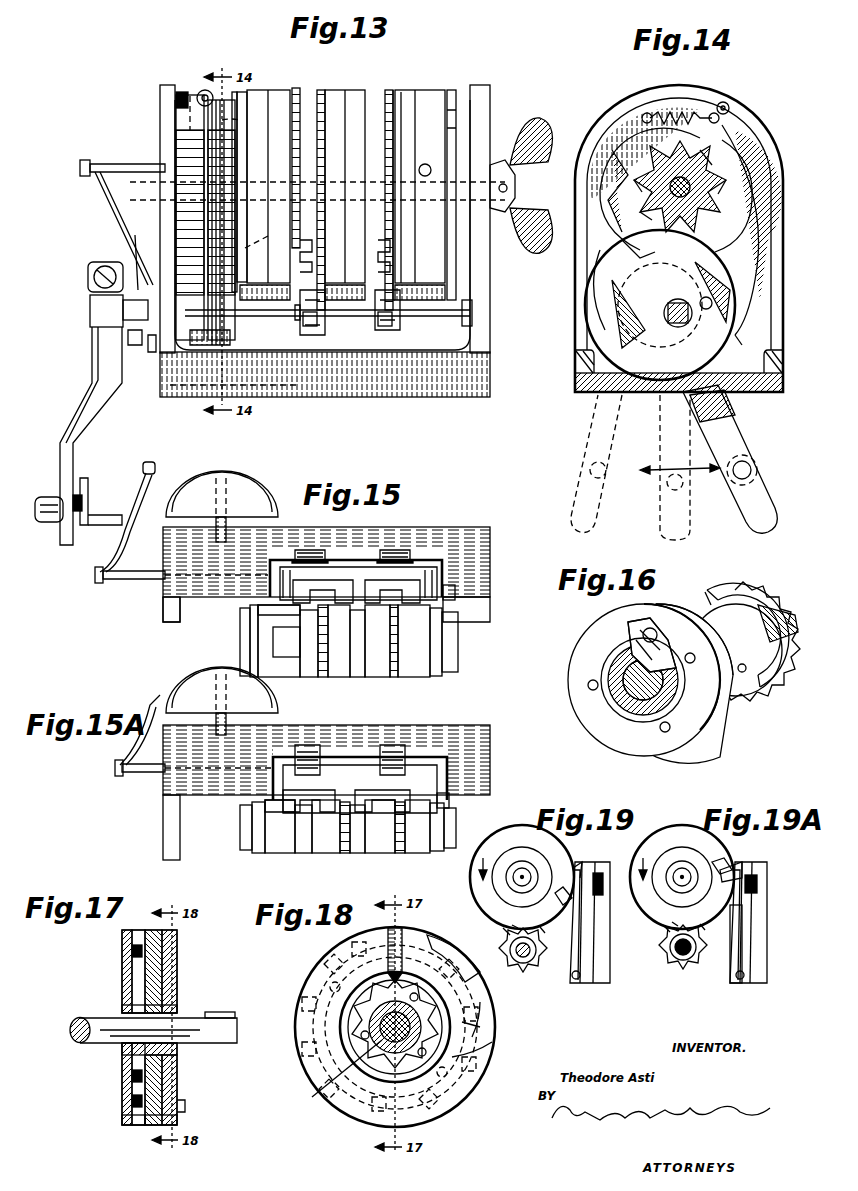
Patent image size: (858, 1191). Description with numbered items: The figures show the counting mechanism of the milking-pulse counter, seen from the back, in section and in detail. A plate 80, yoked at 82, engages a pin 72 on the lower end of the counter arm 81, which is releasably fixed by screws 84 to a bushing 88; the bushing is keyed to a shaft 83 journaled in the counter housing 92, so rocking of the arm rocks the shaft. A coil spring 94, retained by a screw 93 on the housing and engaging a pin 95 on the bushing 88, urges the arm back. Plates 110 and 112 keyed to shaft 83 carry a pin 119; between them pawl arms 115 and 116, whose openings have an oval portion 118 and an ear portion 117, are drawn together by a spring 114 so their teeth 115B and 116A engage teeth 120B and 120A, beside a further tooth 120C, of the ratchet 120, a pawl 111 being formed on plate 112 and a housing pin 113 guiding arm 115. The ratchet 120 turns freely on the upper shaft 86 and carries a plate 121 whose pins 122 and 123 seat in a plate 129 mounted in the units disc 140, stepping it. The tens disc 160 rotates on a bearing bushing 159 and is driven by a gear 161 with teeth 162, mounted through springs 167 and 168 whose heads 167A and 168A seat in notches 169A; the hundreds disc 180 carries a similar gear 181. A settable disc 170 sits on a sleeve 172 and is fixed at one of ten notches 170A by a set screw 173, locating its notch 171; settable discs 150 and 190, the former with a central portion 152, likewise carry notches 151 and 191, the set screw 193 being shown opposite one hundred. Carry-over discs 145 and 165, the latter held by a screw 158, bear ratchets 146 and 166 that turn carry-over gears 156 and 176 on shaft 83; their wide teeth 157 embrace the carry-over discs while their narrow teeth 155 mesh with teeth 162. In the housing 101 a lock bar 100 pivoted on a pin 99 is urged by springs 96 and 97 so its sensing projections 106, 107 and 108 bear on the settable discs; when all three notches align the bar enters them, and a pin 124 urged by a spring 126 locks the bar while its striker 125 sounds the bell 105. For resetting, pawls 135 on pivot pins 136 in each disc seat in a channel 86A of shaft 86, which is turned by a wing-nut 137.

In FIG. 13, the pin 72 is at (90, 505).
In FIG. 14, the pin 72 is at (738, 477).
In FIG. 13, the plate 80 is at (105, 526).
In FIG. 13, the counter arm 81 is at (70, 410).
In FIG. 14, the counter arm 81 is at (716, 432).
In FIG. 13, the yoke 82 is at (88, 488).
In FIG. 13, the shaft 83 is at (412, 314).
In FIG. 14, the shaft 83 is at (664, 315).
In FIG. 19, the shaft 83 is at (510, 950).
In FIG. 19A, the shaft 83 is at (676, 958).
In FIG. 13, the screw 84 is at (92, 277).
In FIG. 13, the shaft 86 is at (515, 190).
In FIG. 14, the shaft 86 is at (680, 197).
In FIG. 16, the shaft 86 is at (635, 703).
In FIG. 17, the shaft 86 is at (72, 1036).
In FIG. 18, the shaft 86 is at (390, 1046).
In FIG. 16, the right-angled channel 86A is at (782, 612).
In FIG. 17, the right-angled channel 86A is at (212, 1016).
In FIG. 13, the bushing 88 is at (90, 318).
In FIG. 13, the counter housing 92 is at (370, 386).
In FIG. 14, the counter housing 92 is at (588, 393).
In FIG. 15, the counter housing 92 is at (480, 615).
In FIG. 15A, the counter housing 92 is at (165, 815).
In FIG. 13, the screw 93 is at (150, 385).
In FIG. 13, the coil spring 94 is at (145, 245).
In FIG. 13, the pin 95 is at (138, 346).
In FIG. 15, the coil spring 96 is at (292, 556).
In FIG. 19, the coil spring 96 is at (600, 895).
In FIG. 19A, the coil spring 96 is at (758, 885).
In FIG. 15, the coil spring 97 is at (380, 558).
In FIG. 19, the pin 99 is at (582, 982).
In FIG. 19A, the pin 99 is at (746, 982).
In FIG. 15, the lock bar 100 is at (425, 568).
In FIG. 15A, the lock bar 100 is at (428, 778).
In FIG. 19, the lock bar 100 is at (586, 940).
In FIG. 19A, the lock bar 100 is at (742, 935).
In FIG. 15, the housing 101 is at (455, 535).
In FIG. 15A, the housing 101 is at (438, 736).
In FIG. 19, the housing 101 is at (596, 868).
In FIG. 19A, the housing 101 is at (758, 868).
In FIG. 15, the bell 105 is at (250, 492).
In FIG. 15A, the bell 105 is at (198, 722).
In FIG. 15, the projection 106 is at (300, 605).
In FIG. 15A, the projection 106 is at (290, 808).
In FIG. 19, the projection 106 is at (578, 862).
In FIG. 19A, the projection 106 is at (742, 862).
In FIG. 15, the projection 107 is at (333, 608).
In FIG. 15A, the projection 107 is at (362, 808).
In FIG. 15, the projection 108 is at (450, 590).
In FIG. 15A, the projection 108 is at (449, 800).
In FIG. 13, the plate 110 is at (200, 290).
In FIG. 14, the pawl 111 is at (640, 256).
In FIG. 13, the plate 112 is at (222, 340).
In FIG. 14, the plate 112 is at (600, 290).
In FIG. 13, the pin 113 is at (182, 92).
In FIG. 14, the pin 113 is at (730, 106).
In FIG. 13, the spring 114 is at (200, 90).
In FIG. 14, the spring 114 is at (682, 115).
In FIG. 13, the pawl arm 115 is at (198, 345).
In FIG. 14, the pawl arm 115 is at (756, 280).
In FIG. 14, the pawl tooth 115B is at (704, 158).
In FIG. 13, the pawl arm 116 is at (210, 243).
In FIG. 14, the pawl arm 116 is at (598, 238).
In FIG. 14, the pawl tooth 116A is at (622, 158).
In FIG. 14, the ear portion 117 is at (742, 332).
In FIG. 14, the oval portion 118 is at (655, 292).
In FIG. 14, the pin 119 is at (706, 310).
In FIG. 13, the ratchet 120 is at (190, 145).
In FIG. 14, the ratchet 120 is at (664, 158).
In FIG. 14, the ratchet tooth 120A is at (636, 186).
In FIG. 14, the ratchet tooth 120B is at (724, 190).
In FIG. 14, the ratchet tooth 120C is at (645, 215).
In FIG. 13, the plate 121 is at (236, 290).
In FIG. 15, the plate 121 is at (240, 615).
In FIG. 15A, the plate 121 is at (240, 815).
In FIG. 13, the pin 122 is at (268, 236).
In FIG. 13, the pin 123 is at (230, 120).
In FIG. 13, the elongated pin 124 is at (112, 163).
In FIG. 15, the elongated pin 124 is at (140, 582).
In FIG. 15A, the elongated pin 124 is at (118, 772).
In FIG. 15, the striker 125 is at (155, 470).
In FIG. 13, the spring 126 is at (118, 200).
In FIG. 13, the plate 129 is at (258, 290).
In FIG. 15, the plate 129 is at (250, 630).
In FIG. 15A, the plate 129 is at (252, 832).
In FIG. 15A, the pawl 135 is at (132, 758).
In FIG. 16, the pawl 135 is at (632, 645).
In FIG. 16, the pivot pin 136 is at (643, 633).
In FIG. 13, the wing-nut 137 is at (520, 120).
In FIG. 13, the units disc 140 is at (262, 88).
In FIG. 15, the units disc 140 is at (258, 640).
In FIG. 15A, the units disc 140 is at (262, 850).
In FIG. 13, the carry-over disc 145 is at (296, 97).
In FIG. 15, the carry-over disc 145 is at (308, 678).
In FIG. 13, the carry-over ratchet 146 is at (300, 258).
In FIG. 13, the settable disc 150 is at (278, 90).
In FIG. 15, the settable disc 150 is at (280, 660).
In FIG. 15A, the settable disc 150 is at (275, 855).
In FIG. 19, the settable disc 150 is at (505, 827).
In FIG. 19A, the settable disc 150 is at (660, 827).
In FIG. 15, the notch 151 is at (273, 645).
In FIG. 15A, the notch 151 is at (303, 855).
In FIG. 19, the notch 151 is at (562, 886).
In FIG. 19A, the notch 151 is at (720, 866).
In FIG. 19, the hub 152 is at (505, 862).
In FIG. 19A, the hub 152 is at (683, 865).
In FIG. 13, the narrow teeth 155 is at (318, 298).
In FIG. 19, the narrow teeth 155 is at (528, 918).
In FIG. 19A, the narrow teeth 155 is at (690, 918).
In FIG. 13, the carry-over gear 156 is at (302, 322).
In FIG. 19, the carry-over gear 156 is at (530, 972).
In FIG. 19A, the carry-over gear 156 is at (686, 970).
In FIG. 13, the wide teeth 157 is at (295, 312).
In FIG. 19, the wide teeth 157 is at (505, 928).
In FIG. 19A, the wide teeth 157 is at (668, 926).
In FIG. 17, the screw 158 is at (178, 1058).
In FIG. 16, the bearing bushing 159 is at (680, 705).
In FIG. 17, the bearing bushing 159 is at (178, 1008).
In FIG. 18, the bearing bushing 159 is at (312, 1100).
In FIG. 13, the tens disc 160 is at (346, 90).
In FIG. 15, the tens disc 160 is at (338, 678).
In FIG. 15A, the tens disc 160 is at (325, 855).
In FIG. 16, the tens disc 160 is at (592, 722).
In FIG. 17, the tens disc 160 is at (138, 1128).
In FIG. 13, the gear 161 is at (322, 98).
In FIG. 16, the gear 161 is at (760, 702).
In FIG. 17, the gear 161 is at (124, 1080).
In FIG. 16, the gear teeth 162 is at (768, 690).
In FIG. 18, the gear teeth 162 is at (325, 970).
In FIG. 13, the carry-over disc 165 is at (388, 92).
In FIG. 15, the carry-over disc 165 is at (378, 615).
In FIG. 17, the carry-over disc 165 is at (170, 1088).
In FIG. 13, the carry-over ratchet 166 is at (386, 258).
In FIG. 17, the carry-over ratchet 166 is at (186, 1108).
In FIG. 16, the spring 167 is at (752, 596).
In FIG. 17, the spring 167 is at (128, 960).
In FIG. 18, the spring 167 is at (305, 1050).
In FIG. 16, the head 167A is at (708, 585).
In FIG. 18, the head 167A is at (310, 1020).
In FIG. 18, the spring 168 is at (475, 992).
In FIG. 18, the head 168A is at (490, 1027).
In FIG. 17, the notch 169A is at (140, 935).
In FIG. 18, the notch 169A is at (312, 1085).
In FIG. 13, the settable disc 170 is at (350, 98).
In FIG. 15, the settable disc 170 is at (362, 680).
In FIG. 15A, the settable disc 170 is at (345, 848).
In FIG. 17, the settable disc 170 is at (160, 1128).
In FIG. 18, the settable disc 170 is at (348, 1110).
In FIG. 18, the notch 170A is at (480, 1050).
In FIG. 15, the notch 171 is at (358, 625).
In FIG. 15A, the notch 171 is at (372, 852).
In FIG. 18, the notch 171 is at (448, 945).
In FIG. 17, the sleeve 172 is at (168, 985).
In FIG. 18, the sleeve 172 is at (478, 1022).
In FIG. 17, the set screw 173 is at (178, 952).
In FIG. 18, the set screw 173 is at (402, 935).
In FIG. 13, the carry-over gear 176 is at (390, 328).
In FIG. 13, the hundreds disc 180 is at (408, 100).
In FIG. 15, the hundreds disc 180 is at (410, 672).
In FIG. 15A, the hundreds disc 180 is at (405, 852).
In FIG. 13, the gear 181 is at (392, 95).
In FIG. 13, the settable disc 190 is at (432, 98).
In FIG. 15, the settable disc 190 is at (432, 640).
In FIG. 15A, the settable disc 190 is at (435, 845).
In FIG. 13, the notch 191 is at (428, 112).
In FIG. 15, the notch 191 is at (446, 668).
In FIG. 15A, the notch 191 is at (445, 822).
In FIG. 13, the set screw 193 is at (430, 170).